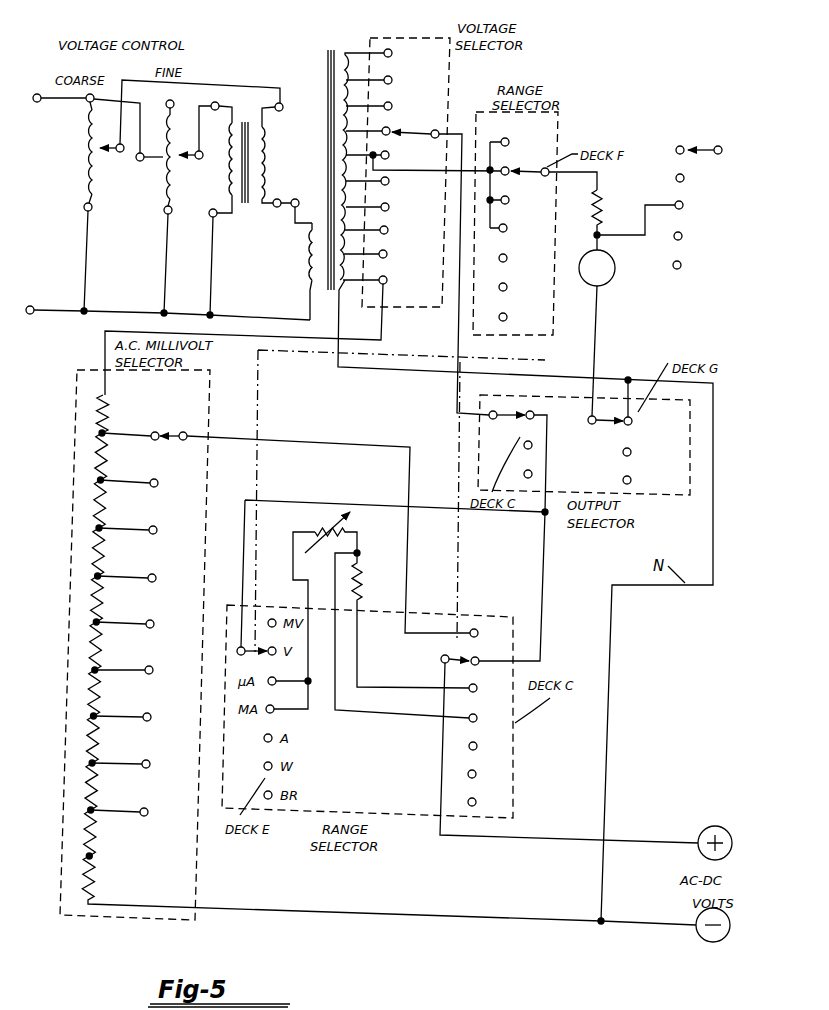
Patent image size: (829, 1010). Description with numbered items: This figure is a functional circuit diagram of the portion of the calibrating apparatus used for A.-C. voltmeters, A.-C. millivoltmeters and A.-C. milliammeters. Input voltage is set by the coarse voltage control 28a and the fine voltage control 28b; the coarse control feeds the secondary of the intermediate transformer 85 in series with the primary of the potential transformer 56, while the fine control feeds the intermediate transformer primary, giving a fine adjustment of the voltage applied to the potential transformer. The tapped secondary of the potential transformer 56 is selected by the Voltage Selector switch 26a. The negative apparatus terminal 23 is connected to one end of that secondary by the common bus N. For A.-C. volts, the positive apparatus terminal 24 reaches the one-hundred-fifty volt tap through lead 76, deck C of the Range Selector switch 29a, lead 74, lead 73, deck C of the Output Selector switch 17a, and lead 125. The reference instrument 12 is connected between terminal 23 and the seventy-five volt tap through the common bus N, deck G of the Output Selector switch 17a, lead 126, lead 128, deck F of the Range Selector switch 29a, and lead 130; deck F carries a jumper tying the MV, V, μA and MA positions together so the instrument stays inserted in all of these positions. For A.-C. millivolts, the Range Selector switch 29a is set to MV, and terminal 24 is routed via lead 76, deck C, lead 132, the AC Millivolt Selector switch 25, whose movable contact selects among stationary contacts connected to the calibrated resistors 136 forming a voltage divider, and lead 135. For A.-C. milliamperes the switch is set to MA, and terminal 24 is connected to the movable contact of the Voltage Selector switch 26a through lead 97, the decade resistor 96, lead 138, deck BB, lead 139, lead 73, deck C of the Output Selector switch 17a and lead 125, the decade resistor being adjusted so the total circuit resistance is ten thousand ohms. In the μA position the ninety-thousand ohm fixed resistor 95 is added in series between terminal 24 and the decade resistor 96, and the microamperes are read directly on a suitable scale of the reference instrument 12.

The reference instrument 12 is at (615, 259).
The Output Selector switch 17a is at (692, 472).
The negative apparatus output terminal 23 is at (697, 930).
The positive apparatus output terminal 24 is at (700, 838).
The AC Millivolt Selector switch 25 is at (77, 407).
The Voltage Selector switch 26a is at (417, 38).
The coarse voltage control 28a is at (80, 160).
The fine voltage control 28b is at (165, 168).
The Range Selector switch 29a is at (556, 115).
The potential transformer 56 is at (324, 62).
The lead 73 is at (548, 477).
The lead 74 is at (541, 553).
The lead 76 is at (582, 840).
The intermediate transformer 85 is at (305, 172).
The fixed resistor 95 is at (365, 575).
The decade resistor 96 is at (352, 521).
The lead 97 is at (393, 717).
The lead 125 is at (455, 392).
The lead 126 is at (594, 330).
The lead 128 is at (605, 204).
The lead 130 is at (471, 168).
The lead 132 is at (228, 437).
The lead 135 is at (105, 348).
The calibrated resistors 136 is at (93, 462).
The lead 138 is at (295, 543).
The lead 139 is at (244, 500).